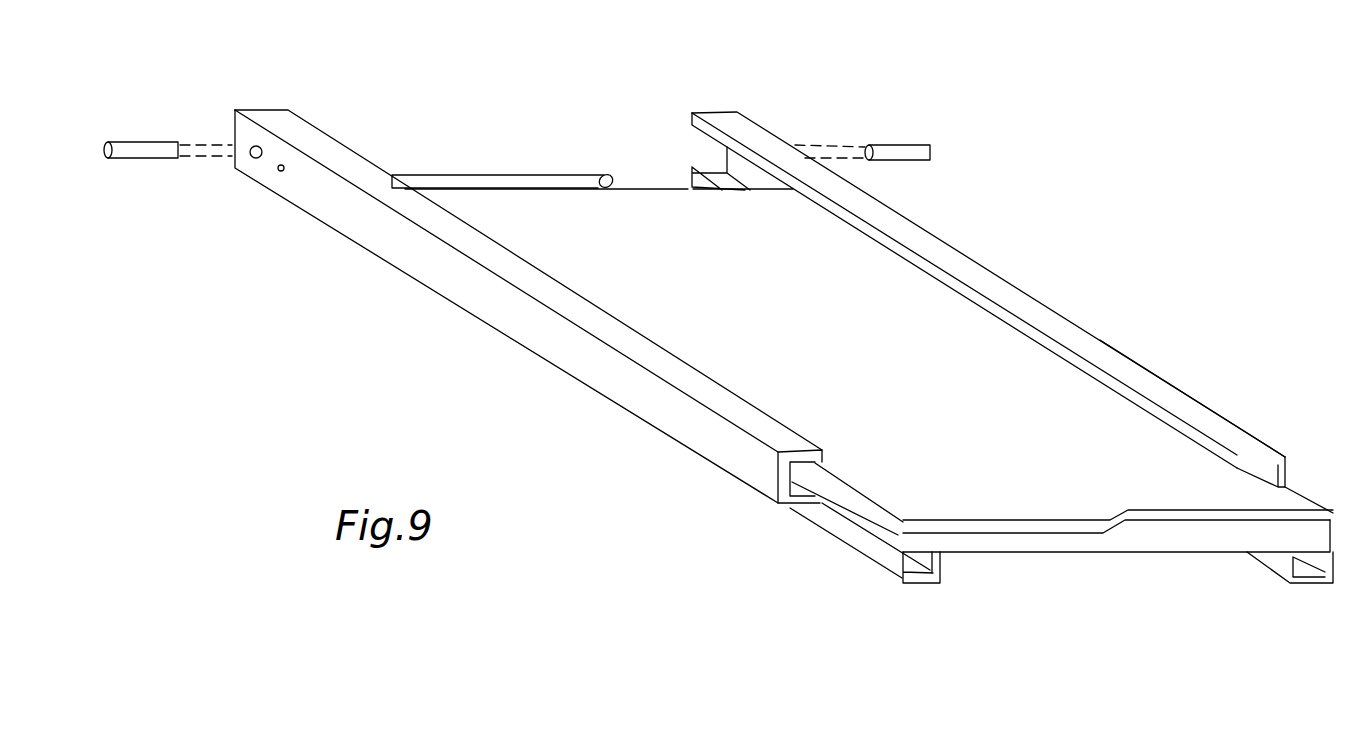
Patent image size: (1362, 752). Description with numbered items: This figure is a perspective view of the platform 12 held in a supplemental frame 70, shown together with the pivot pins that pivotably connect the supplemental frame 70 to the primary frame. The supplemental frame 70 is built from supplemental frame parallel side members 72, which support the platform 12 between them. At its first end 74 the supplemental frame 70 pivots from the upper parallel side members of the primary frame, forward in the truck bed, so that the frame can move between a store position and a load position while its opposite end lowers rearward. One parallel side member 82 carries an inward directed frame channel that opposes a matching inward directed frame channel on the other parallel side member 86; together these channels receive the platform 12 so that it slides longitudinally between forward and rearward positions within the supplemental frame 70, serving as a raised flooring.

The platform 12 is at (903, 280).
The supplemental frame 70 is at (325, 205).
The supplemental frame parallel side members 72 is at (420, 268).
The first end 74 is at (274, 113).
The parallel side member 82 is at (690, 433).
The parallel side member 86 is at (1147, 377).